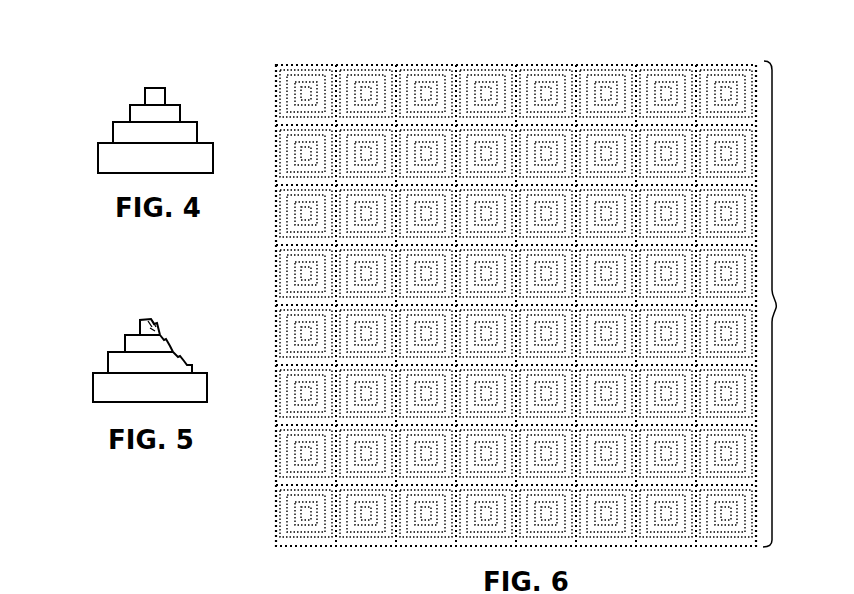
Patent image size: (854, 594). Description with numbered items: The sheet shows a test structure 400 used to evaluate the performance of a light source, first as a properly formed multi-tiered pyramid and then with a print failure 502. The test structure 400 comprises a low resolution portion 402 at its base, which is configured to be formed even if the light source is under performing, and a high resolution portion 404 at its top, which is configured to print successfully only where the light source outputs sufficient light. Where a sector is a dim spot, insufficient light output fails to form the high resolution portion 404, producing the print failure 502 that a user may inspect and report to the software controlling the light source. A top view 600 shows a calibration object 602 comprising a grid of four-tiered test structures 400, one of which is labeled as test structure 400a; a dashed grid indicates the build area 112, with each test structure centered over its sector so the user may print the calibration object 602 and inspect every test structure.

In FIG. 4, the test structure 400 is at (150, 55).
In FIG. 5, the test structure 400 is at (127, 279).
In FIG. 4, the low resolution portion 402 is at (95, 157).
In FIG. 5, the low resolution portion 402 is at (150, 387).
In FIG. 4, the high resolution portion 404 is at (139, 98).
In FIG. 5, the high resolution portion 404 is at (136, 327).
In FIG. 5, the print failure 502 is at (180, 352).
In FIG. 6, the top view 600 is at (761, 31).
In FIG. 6, the test structure 400a is at (277, 90).
In FIG. 6, the calibration object 602 is at (776, 300).
In FIG. 6, the build area 112 is at (245, 530).